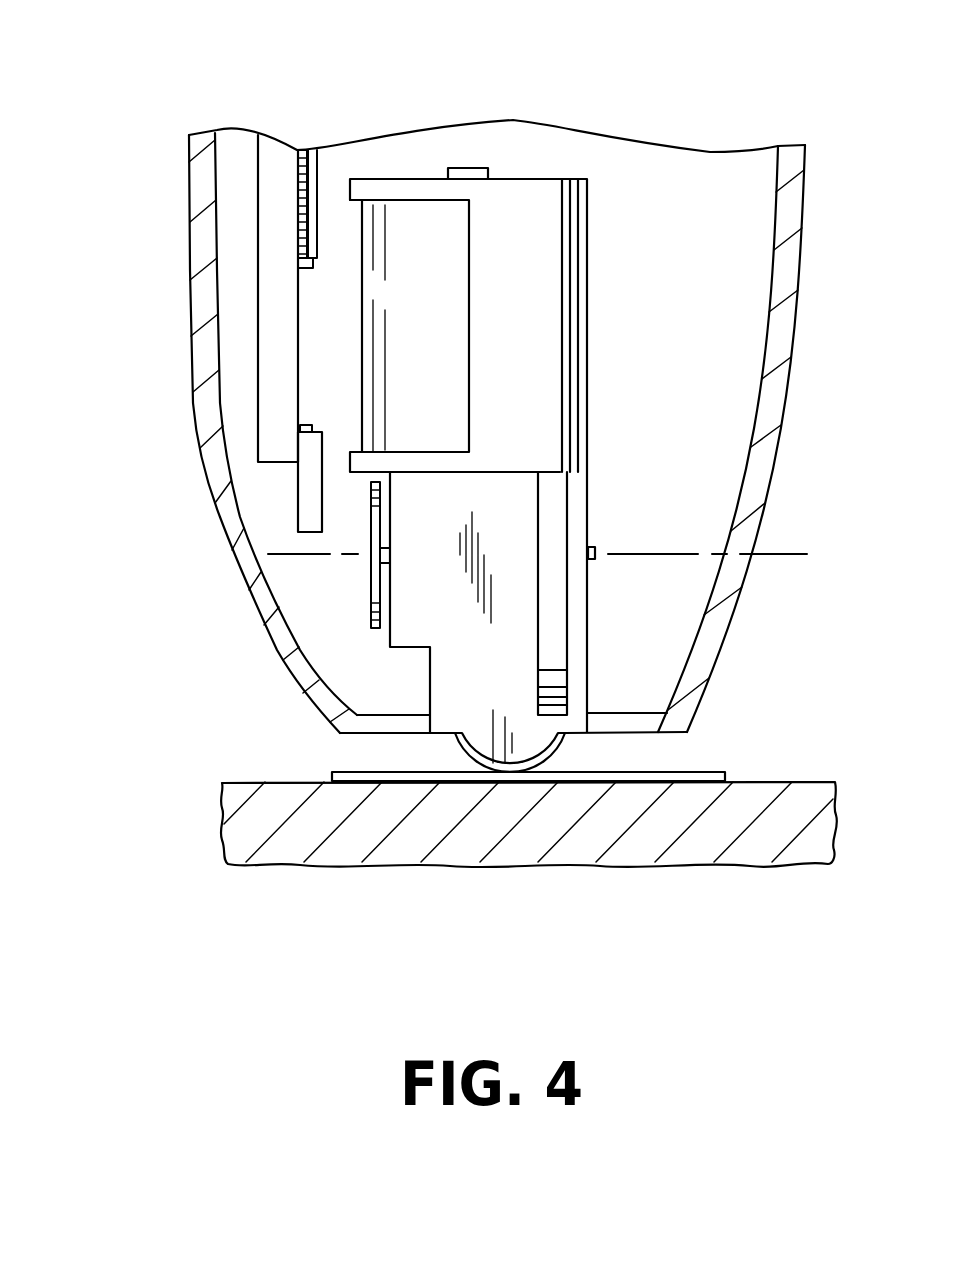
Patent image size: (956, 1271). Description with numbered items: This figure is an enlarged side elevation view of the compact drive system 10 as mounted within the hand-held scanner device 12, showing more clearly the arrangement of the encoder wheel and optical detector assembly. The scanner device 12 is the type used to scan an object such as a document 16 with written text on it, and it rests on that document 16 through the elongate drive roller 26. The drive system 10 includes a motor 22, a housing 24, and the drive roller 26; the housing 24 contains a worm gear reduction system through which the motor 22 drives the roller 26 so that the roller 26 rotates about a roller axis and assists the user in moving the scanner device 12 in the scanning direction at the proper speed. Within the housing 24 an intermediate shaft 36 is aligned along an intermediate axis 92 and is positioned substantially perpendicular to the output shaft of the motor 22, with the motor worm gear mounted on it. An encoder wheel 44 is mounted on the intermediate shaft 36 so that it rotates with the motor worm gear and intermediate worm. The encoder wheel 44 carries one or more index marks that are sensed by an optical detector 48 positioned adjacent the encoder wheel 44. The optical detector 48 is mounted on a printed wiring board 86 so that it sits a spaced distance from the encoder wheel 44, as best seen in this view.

The compact drive system 10 is at (392, 68).
The hand-held scanner device 12 is at (180, 172).
The document 16 is at (703, 772).
The motor 22 is at (360, 302).
The housing 24 is at (553, 165).
The elongate drive roller 26 is at (492, 770).
The intermediate shaft 36 is at (592, 548).
The encoder wheel 44 is at (370, 585).
The optical detector 48 is at (298, 506).
The printed wiring board 86 is at (260, 398).
The intermediate axis 92 is at (790, 552).